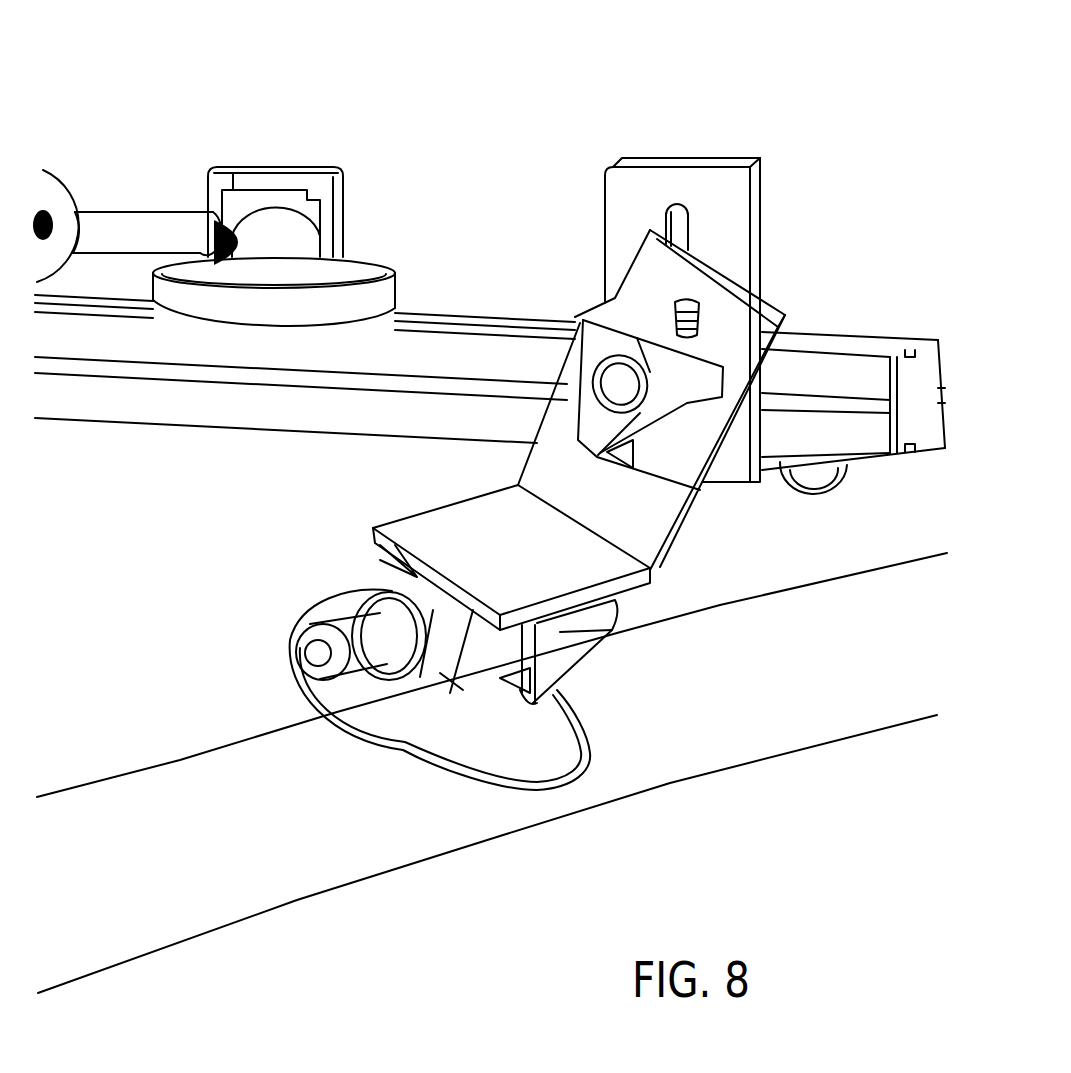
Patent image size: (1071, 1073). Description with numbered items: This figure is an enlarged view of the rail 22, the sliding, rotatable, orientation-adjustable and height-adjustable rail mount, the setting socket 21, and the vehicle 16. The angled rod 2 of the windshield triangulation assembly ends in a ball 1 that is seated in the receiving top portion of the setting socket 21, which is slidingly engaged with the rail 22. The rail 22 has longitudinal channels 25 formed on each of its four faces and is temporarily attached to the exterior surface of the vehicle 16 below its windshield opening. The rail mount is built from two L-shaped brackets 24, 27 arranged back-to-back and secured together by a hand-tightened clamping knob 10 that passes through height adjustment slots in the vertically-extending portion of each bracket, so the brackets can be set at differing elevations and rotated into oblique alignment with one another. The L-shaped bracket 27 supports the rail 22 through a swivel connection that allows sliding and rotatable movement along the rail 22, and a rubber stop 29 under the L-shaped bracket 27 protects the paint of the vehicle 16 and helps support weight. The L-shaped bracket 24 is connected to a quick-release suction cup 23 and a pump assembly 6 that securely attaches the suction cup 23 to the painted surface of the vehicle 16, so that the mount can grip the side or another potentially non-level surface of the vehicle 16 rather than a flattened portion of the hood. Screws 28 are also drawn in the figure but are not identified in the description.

The ball 1 is at (273, 225).
The angled rod 2 is at (125, 242).
The pump assembly 6 is at (368, 645).
The clamping knob 10 is at (668, 392).
The vehicle 16 is at (847, 703).
The setting socket 21 is at (331, 166).
The rail 22 is at (252, 417).
The suction cup 23 is at (443, 743).
The L-shaped bracket 24 is at (640, 545).
The longitudinal channels 25 is at (107, 366).
The L-shaped bracket 27 is at (643, 195).
The screws 28 is at (700, 312).
The rubber stop 29 is at (828, 482).